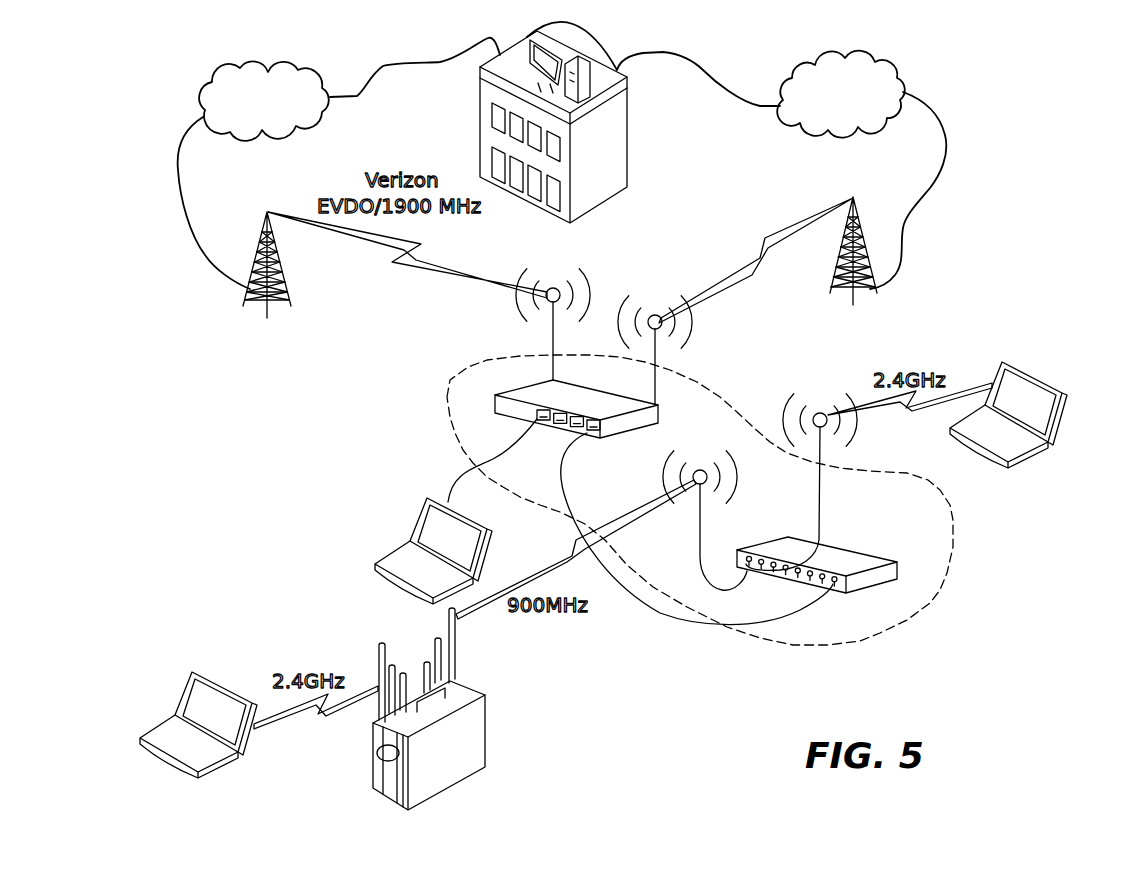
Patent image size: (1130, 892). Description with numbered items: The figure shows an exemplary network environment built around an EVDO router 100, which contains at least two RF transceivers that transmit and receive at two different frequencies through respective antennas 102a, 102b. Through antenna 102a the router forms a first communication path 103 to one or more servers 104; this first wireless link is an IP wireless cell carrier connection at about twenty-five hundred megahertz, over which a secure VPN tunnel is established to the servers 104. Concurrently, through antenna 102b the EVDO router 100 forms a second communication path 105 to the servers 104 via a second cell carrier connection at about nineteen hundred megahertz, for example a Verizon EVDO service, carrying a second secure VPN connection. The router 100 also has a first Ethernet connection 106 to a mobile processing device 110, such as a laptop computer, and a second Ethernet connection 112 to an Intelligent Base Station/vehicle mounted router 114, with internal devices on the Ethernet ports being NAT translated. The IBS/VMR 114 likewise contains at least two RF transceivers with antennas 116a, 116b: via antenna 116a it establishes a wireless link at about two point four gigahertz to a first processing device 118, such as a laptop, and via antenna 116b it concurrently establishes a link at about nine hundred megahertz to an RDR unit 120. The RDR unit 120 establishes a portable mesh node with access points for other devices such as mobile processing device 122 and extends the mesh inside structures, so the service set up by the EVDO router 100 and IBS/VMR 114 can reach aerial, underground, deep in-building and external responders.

The EVDO router 100 is at (620, 425).
The antenna 102a is at (656, 357).
The antenna 102b is at (552, 338).
The first communication path 103 is at (757, 221).
The servers 104 is at (583, 84).
The second communication path 105 is at (336, 149).
The first Ethernet connection 106 is at (508, 458).
The mobile processing device 110 is at (392, 552).
The second Ethernet connection 112 is at (685, 617).
The Intelligent Base Station/vehicle mounted router 114 is at (835, 553).
The antenna 116a is at (818, 503).
The antenna 116b is at (697, 507).
The first processing device 118 is at (1020, 458).
The RDR unit 120 is at (487, 728).
The mobile processing device 122 is at (180, 697).